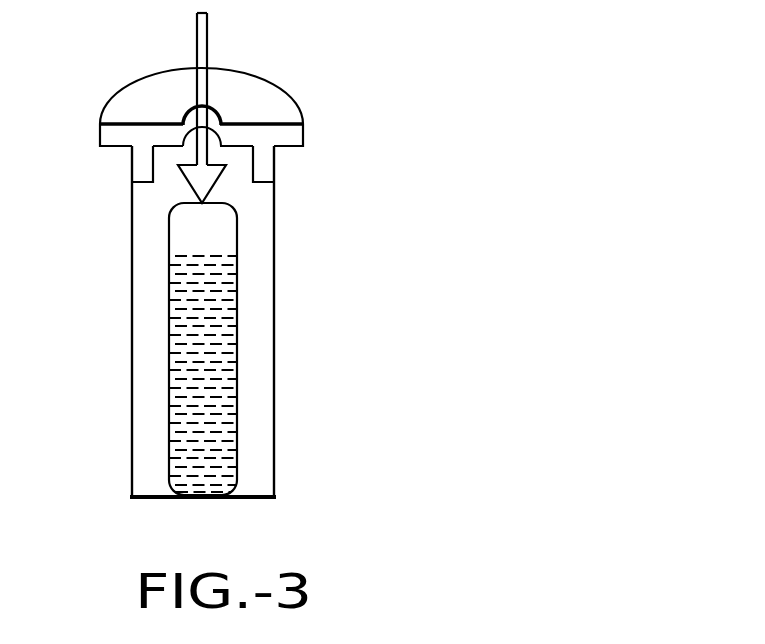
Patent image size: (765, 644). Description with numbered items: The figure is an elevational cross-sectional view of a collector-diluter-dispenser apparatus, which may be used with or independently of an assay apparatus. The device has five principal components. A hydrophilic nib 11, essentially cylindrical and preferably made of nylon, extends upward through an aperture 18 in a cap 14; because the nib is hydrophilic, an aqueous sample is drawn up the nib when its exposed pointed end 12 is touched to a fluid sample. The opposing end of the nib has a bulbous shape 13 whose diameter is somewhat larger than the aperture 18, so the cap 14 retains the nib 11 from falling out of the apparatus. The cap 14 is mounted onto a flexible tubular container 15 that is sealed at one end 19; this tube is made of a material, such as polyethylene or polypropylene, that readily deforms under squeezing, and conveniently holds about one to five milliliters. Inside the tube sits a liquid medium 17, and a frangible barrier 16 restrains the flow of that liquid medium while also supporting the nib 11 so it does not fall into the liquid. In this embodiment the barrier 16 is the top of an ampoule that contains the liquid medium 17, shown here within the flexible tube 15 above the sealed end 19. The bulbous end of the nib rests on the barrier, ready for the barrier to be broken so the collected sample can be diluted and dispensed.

The hydrophilic nib 11 is at (207, 52).
The pointed end 12 is at (207, 20).
The bulbous shape 13 is at (214, 192).
The cap 14 is at (303, 132).
The flexible tubular container 15 is at (275, 322).
The frangible barrier 16 is at (237, 243).
The liquid medium 17 is at (228, 395).
The aperture 18 is at (209, 114).
The sealed end 19 is at (237, 498).